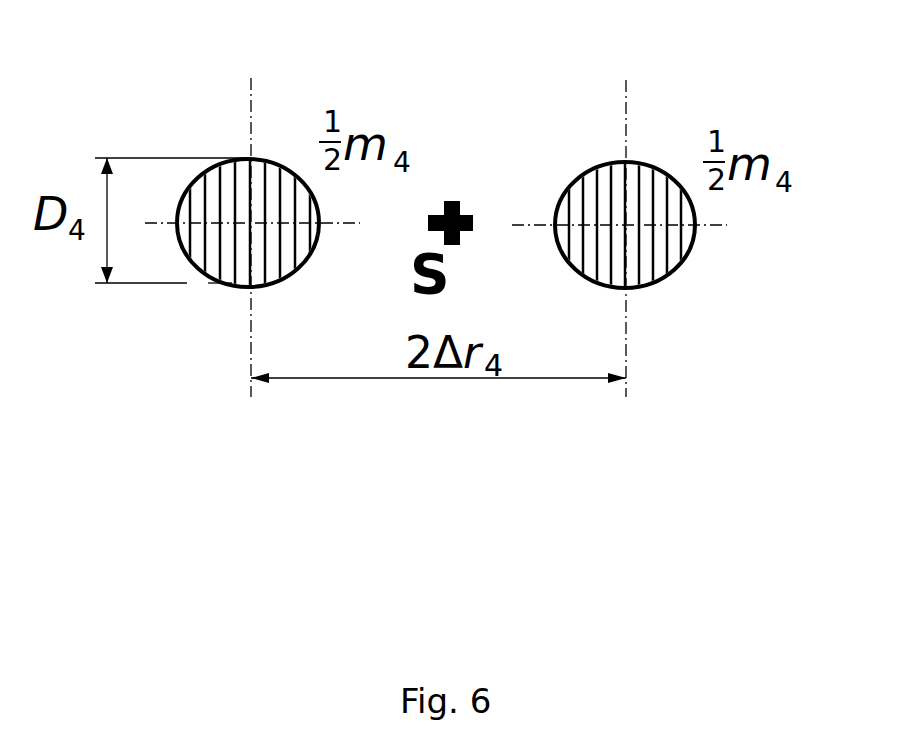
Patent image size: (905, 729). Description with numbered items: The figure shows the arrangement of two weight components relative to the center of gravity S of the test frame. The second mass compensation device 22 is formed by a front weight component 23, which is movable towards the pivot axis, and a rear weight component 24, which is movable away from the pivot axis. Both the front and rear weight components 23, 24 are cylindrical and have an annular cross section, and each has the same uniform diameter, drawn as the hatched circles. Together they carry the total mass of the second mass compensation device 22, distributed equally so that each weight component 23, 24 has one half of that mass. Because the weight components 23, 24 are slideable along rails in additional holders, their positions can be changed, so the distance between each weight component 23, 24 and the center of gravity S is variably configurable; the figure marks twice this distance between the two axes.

The second mass compensation device 22 is at (417, 153).
The front weight component 23 is at (228, 220).
The rear weight component 24 is at (613, 222).